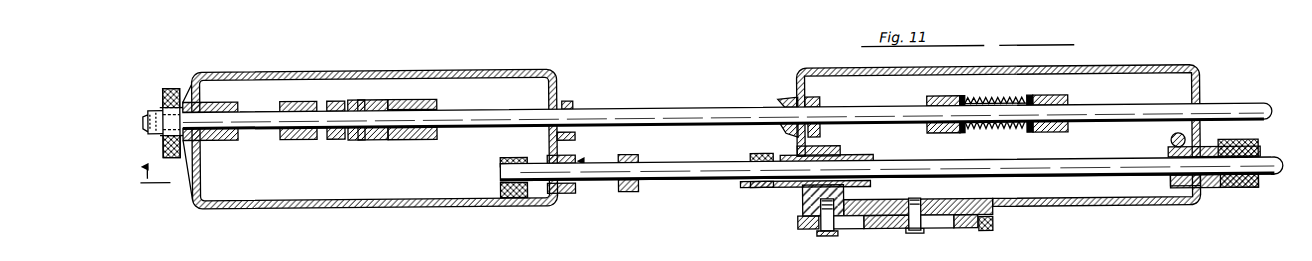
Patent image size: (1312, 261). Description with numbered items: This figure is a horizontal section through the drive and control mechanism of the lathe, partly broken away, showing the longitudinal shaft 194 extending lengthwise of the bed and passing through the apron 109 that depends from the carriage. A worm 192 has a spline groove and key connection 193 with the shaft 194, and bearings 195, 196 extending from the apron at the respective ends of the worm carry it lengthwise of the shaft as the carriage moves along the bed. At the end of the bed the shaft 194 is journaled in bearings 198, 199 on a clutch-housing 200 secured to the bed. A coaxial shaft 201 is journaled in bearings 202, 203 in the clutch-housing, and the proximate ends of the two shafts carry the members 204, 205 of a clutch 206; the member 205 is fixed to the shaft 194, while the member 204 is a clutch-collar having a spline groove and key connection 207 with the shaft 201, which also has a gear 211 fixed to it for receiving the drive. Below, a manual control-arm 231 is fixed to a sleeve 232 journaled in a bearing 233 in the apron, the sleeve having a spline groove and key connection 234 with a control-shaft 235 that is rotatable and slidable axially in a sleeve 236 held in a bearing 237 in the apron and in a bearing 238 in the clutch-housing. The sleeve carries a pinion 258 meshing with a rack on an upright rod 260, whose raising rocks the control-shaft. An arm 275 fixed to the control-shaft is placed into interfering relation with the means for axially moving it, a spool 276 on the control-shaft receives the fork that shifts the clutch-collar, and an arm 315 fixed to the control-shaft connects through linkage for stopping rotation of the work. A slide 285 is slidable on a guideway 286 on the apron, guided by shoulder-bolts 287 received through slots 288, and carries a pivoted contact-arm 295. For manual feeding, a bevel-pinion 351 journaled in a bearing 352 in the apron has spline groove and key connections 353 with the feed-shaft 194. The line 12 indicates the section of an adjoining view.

The section line / view direction 12 is at (374, 174).
The apron 109 is at (1106, 207).
The worm 192 is at (990, 98).
The spline groove and key connection 193 is at (998, 132).
The longitudinal shaft 194 is at (1116, 108).
The bearing 195 is at (940, 98).
The bearing 196 is at (1056, 98).
The bearing 198 is at (415, 137).
The bearing 199 is at (568, 100).
The clutch-housing 200 is at (399, 203).
The coaxial shaft 201 is at (270, 126).
The bearing 202 is at (218, 137).
The bearing 203 is at (300, 137).
The clutch member 204 is at (335, 98).
The clutch member 205 is at (382, 100).
The clutch 206 is at (363, 137).
The spline groove and key connection 207 is at (345, 140).
The gear 211 is at (172, 84).
The manual control-arm 231 is at (1238, 193).
The sleeve 232 is at (1192, 193).
The bearing 233 is at (1230, 144).
The spline groove and key connection 234 is at (1168, 157).
The control-shaft 235 is at (1064, 180).
The sleeve 236 is at (868, 158).
The bearing 237 is at (825, 148).
The bearing 238 is at (565, 193).
The pinion 258 is at (1178, 186).
The upright rod 260 is at (1171, 143).
The arm 275 is at (760, 188).
The spool 276 is at (512, 197).
The slide 285 is at (880, 230).
The guideway 286 is at (940, 231).
The shoulder-bolts 287 is at (822, 237).
The slots 288 is at (848, 231).
The contact-arm 295 is at (992, 228).
The arm 315 is at (632, 192).
The bevel-pinion 351 is at (790, 98).
The bearing 352 is at (814, 98).
The spline groove and key connections 353 is at (782, 106).